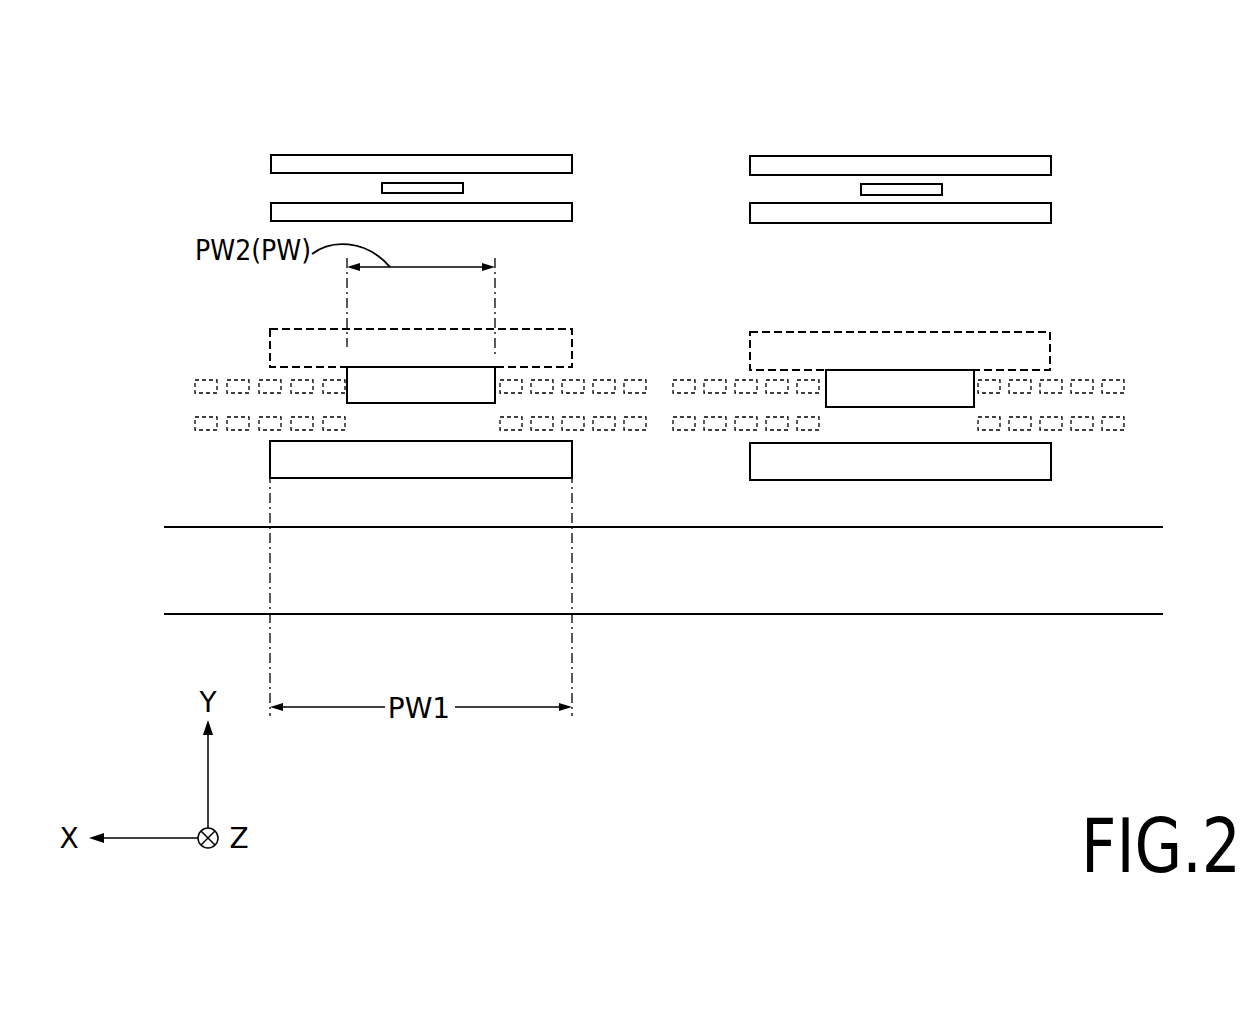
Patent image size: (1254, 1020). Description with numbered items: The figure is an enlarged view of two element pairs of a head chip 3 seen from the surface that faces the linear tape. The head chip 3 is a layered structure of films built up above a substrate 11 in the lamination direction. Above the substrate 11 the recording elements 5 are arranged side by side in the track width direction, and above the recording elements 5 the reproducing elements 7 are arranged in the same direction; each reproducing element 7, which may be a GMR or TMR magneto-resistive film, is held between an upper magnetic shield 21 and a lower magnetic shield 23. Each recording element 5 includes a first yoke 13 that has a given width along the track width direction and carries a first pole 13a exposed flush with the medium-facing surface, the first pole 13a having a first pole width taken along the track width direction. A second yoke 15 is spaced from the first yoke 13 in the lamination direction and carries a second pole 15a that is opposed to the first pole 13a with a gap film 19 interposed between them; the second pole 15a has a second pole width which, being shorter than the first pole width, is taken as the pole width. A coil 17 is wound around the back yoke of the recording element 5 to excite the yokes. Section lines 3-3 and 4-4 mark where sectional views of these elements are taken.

The head chip 3 is at (143, 92).
The section line IV 4 is at (162, 384).
The recording element 5 is at (618, 495).
The reproducing element 7 is at (463, 187).
The substrate 11 is at (677, 587).
The first yoke 13 is at (503, 477).
The first pole 13a is at (447, 460).
The second yoke 15 is at (527, 328).
The second pole 15a is at (433, 385).
The coil 17 is at (228, 436).
The gap film 19 is at (397, 423).
The upper magnetic shield 21 is at (335, 155).
The lower magnetic shield 23 is at (573, 210).